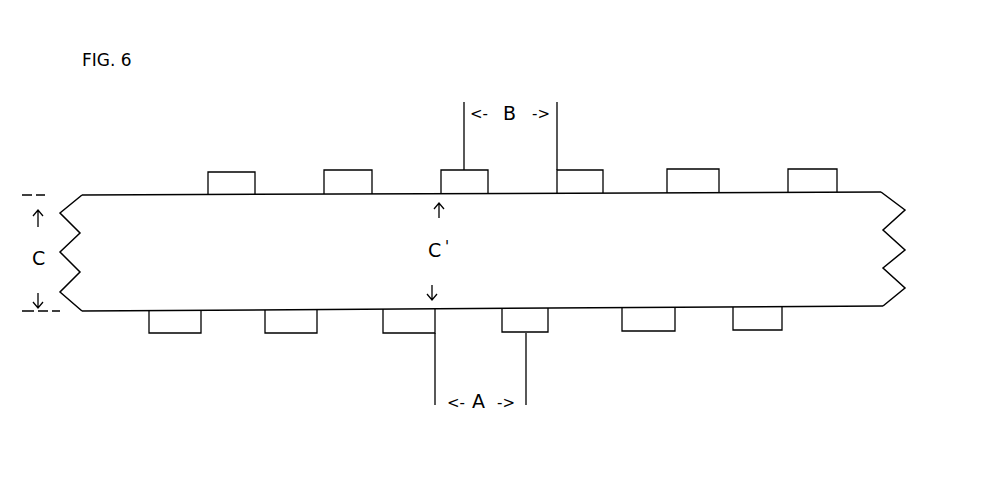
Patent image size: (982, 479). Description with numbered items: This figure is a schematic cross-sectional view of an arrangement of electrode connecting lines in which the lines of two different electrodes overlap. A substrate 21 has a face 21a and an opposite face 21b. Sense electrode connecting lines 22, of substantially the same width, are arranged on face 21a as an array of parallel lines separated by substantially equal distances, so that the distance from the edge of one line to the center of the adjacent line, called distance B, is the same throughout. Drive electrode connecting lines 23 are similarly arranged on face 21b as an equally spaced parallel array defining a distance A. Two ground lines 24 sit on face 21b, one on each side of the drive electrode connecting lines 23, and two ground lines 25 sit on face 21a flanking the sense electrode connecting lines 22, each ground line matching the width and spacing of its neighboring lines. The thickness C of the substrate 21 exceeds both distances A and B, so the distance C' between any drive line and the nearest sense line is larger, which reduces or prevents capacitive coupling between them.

The substrate 21 is at (482, 268).
The face 21a is at (98, 190).
The face 21b is at (843, 307).
The sense electrode connecting lines 22 is at (349, 173).
The drive electrode connecting lines 23 is at (277, 337).
The ground lines 24 is at (162, 337).
The ground lines 25 is at (230, 171).